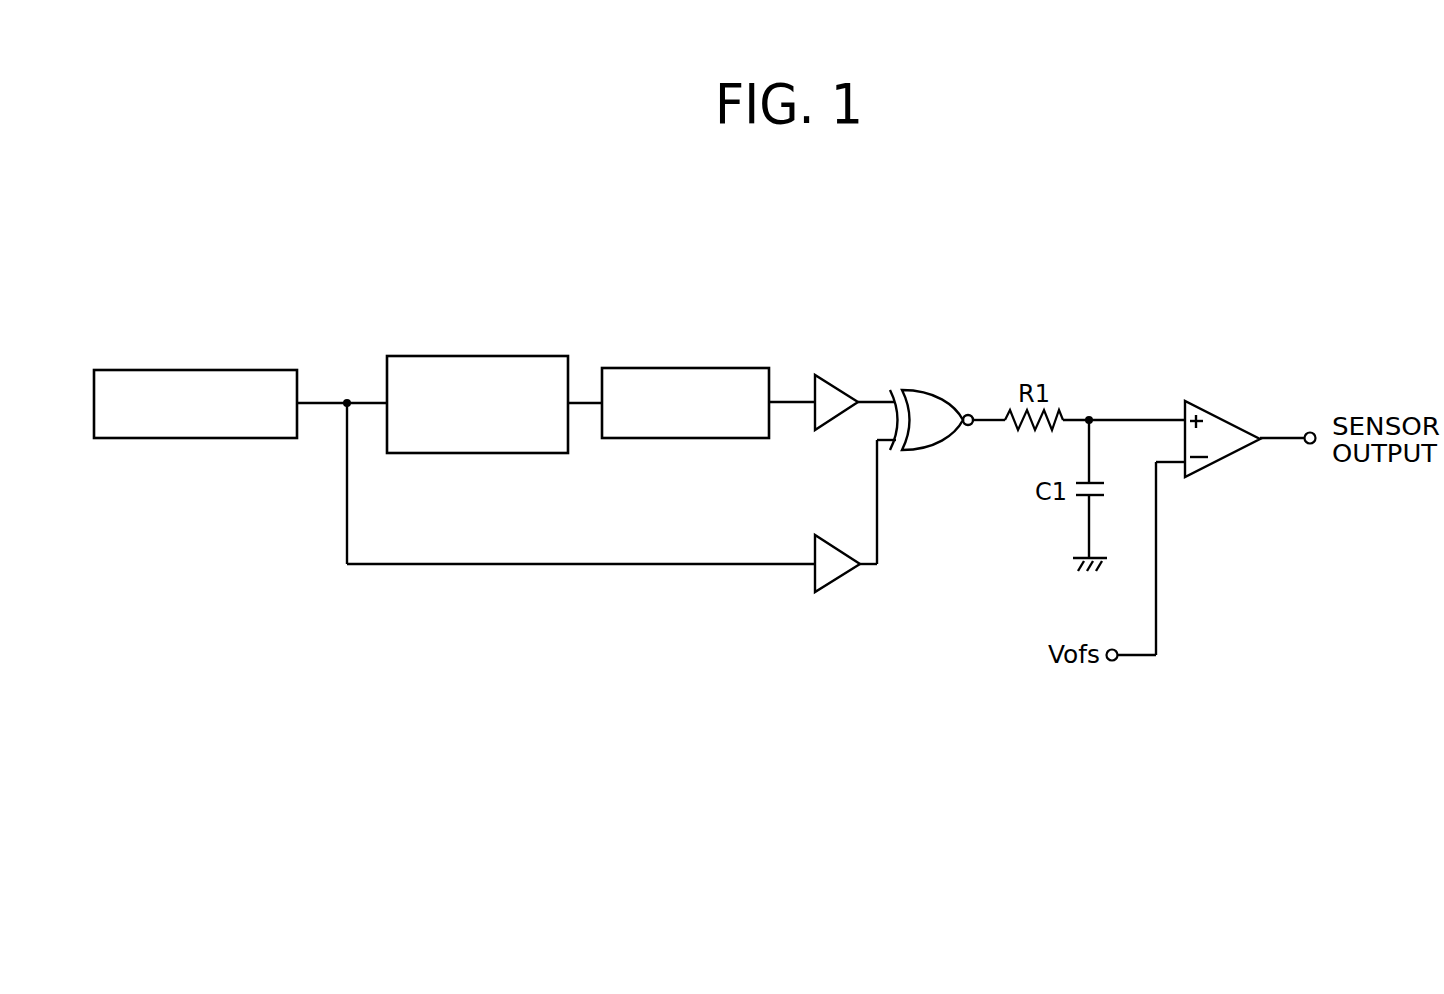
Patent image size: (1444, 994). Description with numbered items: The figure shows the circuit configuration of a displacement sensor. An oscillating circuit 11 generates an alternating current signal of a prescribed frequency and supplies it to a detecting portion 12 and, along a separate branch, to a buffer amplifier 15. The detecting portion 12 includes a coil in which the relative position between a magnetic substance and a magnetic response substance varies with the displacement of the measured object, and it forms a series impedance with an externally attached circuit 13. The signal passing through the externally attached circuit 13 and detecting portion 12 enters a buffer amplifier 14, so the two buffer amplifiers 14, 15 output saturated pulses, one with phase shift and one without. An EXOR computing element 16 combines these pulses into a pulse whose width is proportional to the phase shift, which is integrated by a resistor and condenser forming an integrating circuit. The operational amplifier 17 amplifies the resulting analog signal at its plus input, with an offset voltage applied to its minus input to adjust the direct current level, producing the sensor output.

The oscillating circuit 11 is at (273, 370).
The detecting portion 12 is at (727, 368).
The externally attached circuit 13 is at (537, 356).
The buffer amplifier 14 is at (835, 375).
The buffer amplifier 15 is at (840, 535).
The EXOR computing element 16 is at (935, 390).
The operational amplifier 17 is at (1233, 401).